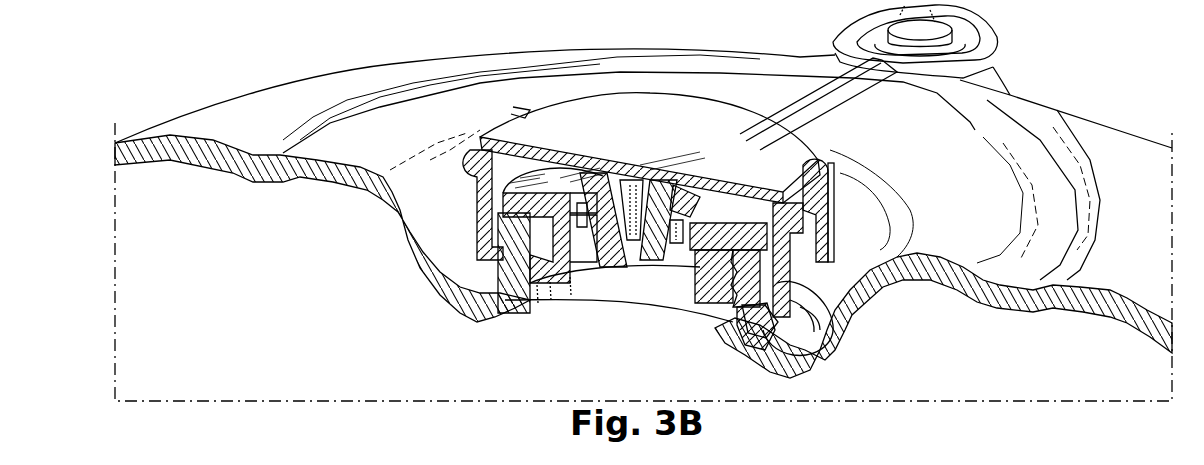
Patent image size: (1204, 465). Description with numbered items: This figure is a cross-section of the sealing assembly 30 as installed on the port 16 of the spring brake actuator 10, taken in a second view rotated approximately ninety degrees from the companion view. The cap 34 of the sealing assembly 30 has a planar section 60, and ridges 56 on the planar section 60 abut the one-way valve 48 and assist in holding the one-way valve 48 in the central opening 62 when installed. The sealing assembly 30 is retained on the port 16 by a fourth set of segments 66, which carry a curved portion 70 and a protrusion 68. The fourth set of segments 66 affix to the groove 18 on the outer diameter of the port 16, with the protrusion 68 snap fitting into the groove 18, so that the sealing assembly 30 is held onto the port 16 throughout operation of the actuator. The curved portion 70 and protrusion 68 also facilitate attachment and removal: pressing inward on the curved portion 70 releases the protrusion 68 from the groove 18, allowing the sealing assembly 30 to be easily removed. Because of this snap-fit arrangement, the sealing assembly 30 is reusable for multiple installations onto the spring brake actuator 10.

The spring brake actuator 10 is at (245, 93).
The port 16 is at (517, 297).
The groove 18 is at (760, 327).
The sealing assembly 30 is at (737, 93).
The cap 34 is at (827, 146).
The one-way valve 48 is at (598, 262).
The ridges 56 is at (663, 187).
The planar section 60 is at (578, 113).
The central opening 62 is at (653, 263).
The fourth set of segments 66 is at (840, 317).
The protrusion 68 is at (760, 330).
The curved portion 70 is at (813, 207).